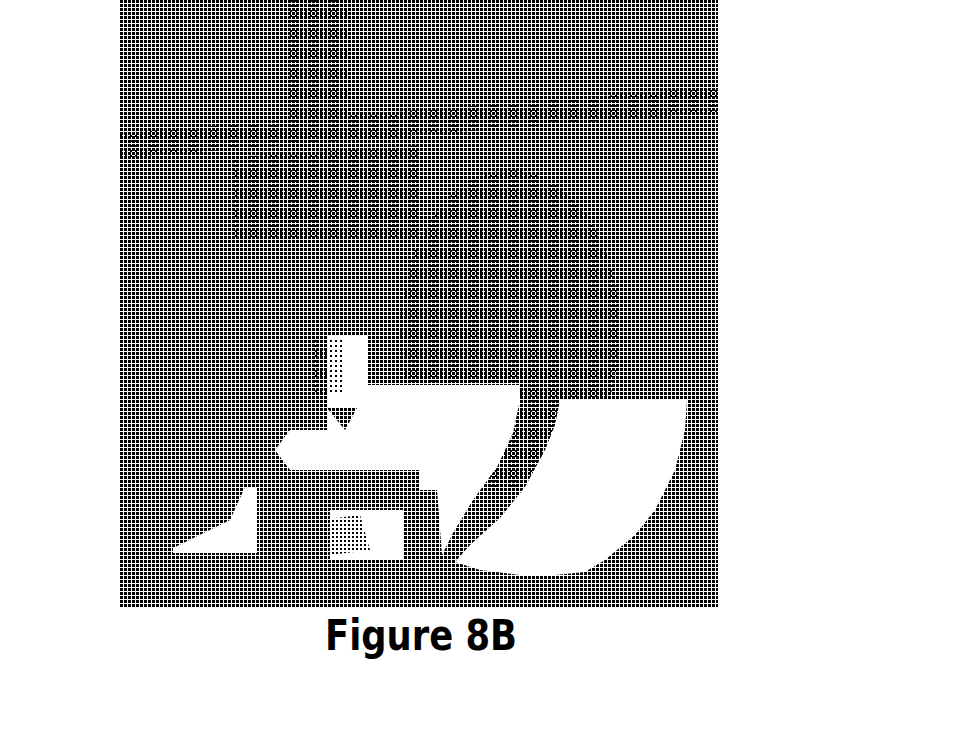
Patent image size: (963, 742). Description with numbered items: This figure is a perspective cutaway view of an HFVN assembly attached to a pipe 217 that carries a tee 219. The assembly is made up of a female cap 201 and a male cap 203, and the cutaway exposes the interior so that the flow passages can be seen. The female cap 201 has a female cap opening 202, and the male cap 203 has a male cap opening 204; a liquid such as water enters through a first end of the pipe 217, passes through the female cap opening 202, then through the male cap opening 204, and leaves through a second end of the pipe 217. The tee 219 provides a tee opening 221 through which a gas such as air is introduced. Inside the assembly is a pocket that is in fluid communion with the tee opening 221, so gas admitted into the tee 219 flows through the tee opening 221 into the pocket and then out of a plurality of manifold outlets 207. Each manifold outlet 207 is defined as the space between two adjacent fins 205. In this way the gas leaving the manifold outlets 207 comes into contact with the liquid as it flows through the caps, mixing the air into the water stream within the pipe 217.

The female cap 201 is at (548, 265).
The female cap opening 202 is at (530, 353).
The male cap 203 is at (240, 214).
The male cap opening 204 is at (318, 365).
The fins 205 is at (336, 305).
The manifold outlets 207 is at (338, 418).
The pipe 217 is at (645, 135).
The tee 219 is at (361, 23).
The tee opening 221 is at (352, 128).